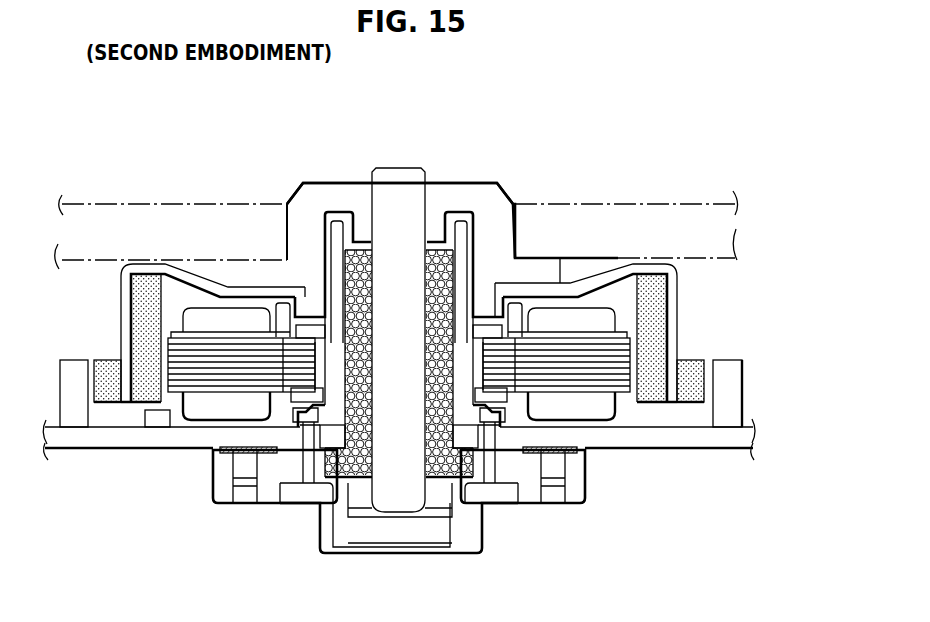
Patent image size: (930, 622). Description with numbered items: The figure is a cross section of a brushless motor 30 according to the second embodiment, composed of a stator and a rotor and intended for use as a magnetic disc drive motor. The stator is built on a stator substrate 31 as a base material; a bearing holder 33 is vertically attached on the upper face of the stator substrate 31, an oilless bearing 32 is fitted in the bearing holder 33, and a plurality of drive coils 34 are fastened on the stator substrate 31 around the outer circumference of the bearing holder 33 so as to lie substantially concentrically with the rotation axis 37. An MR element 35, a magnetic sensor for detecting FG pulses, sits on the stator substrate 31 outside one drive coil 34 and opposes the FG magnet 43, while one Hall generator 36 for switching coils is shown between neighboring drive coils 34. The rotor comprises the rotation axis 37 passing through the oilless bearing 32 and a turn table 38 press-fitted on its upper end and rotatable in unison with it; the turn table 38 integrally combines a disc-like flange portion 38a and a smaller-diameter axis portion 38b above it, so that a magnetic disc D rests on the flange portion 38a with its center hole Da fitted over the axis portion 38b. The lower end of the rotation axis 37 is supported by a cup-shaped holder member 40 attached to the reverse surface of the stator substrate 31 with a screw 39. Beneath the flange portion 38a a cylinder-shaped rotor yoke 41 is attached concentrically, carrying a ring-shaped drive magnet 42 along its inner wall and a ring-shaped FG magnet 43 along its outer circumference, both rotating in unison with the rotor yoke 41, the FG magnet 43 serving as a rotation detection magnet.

The brushless motor 30 is at (178, 154).
The stator substrate 31 is at (683, 438).
The oilless bearing 32 is at (442, 480).
The bearing holder 33 is at (480, 416).
The drive coil 34 is at (584, 412).
The MR element 35 is at (728, 376).
The Hall generator 36 is at (157, 420).
The rotation axis 37 is at (400, 188).
The turn table 38 is at (628, 116).
The flange portion 38a is at (560, 258).
The axis portion 38b is at (546, 257).
The screw 39 is at (298, 488).
The holder member 40 is at (380, 530).
The rotor yoke 41 is at (678, 283).
The drive magnet 42 is at (652, 314).
The FG magnet 43 is at (693, 366).
The magnetic disc D is at (134, 196).
The center hole Da is at (277, 204).